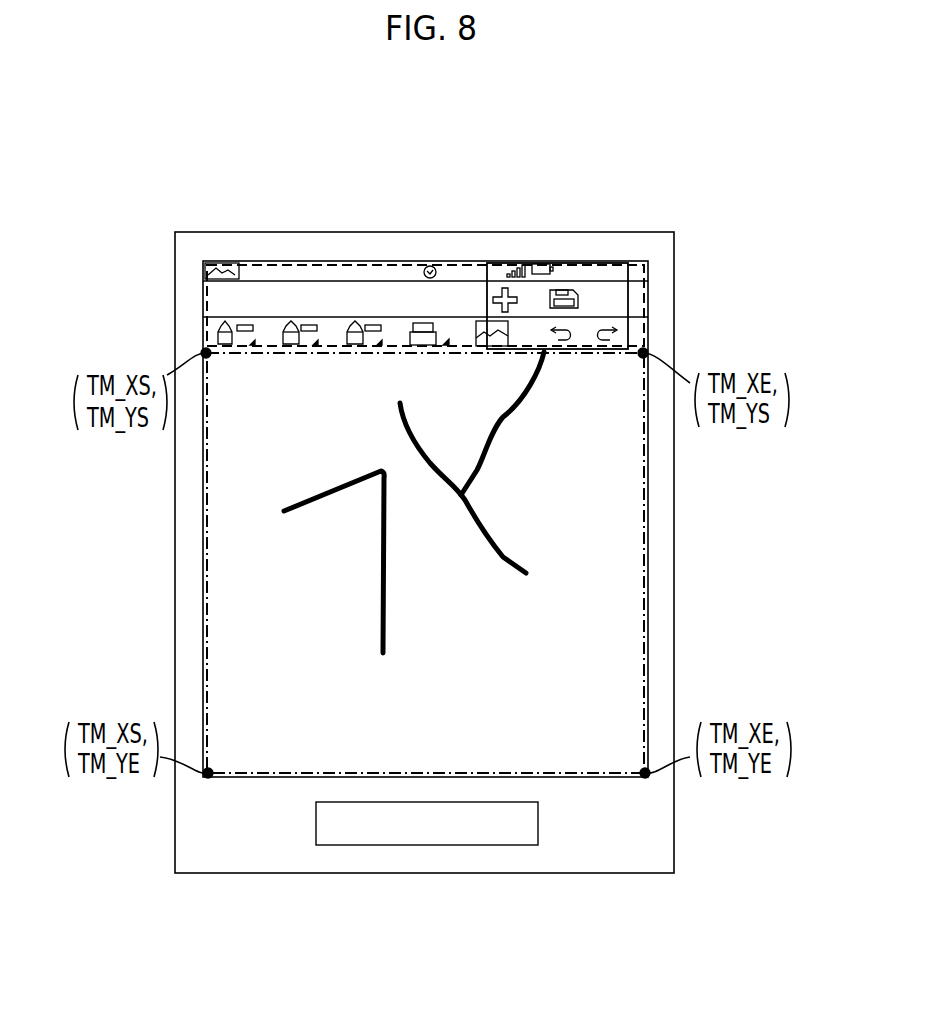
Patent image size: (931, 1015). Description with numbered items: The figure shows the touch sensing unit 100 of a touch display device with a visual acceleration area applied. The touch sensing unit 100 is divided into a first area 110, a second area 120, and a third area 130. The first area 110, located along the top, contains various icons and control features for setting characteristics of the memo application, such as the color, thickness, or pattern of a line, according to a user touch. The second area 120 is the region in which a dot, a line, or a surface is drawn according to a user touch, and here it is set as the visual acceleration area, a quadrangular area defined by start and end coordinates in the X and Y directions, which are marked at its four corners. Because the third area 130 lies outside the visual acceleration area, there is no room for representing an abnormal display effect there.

The touch sensing unit 100 is at (453, 146).
The first area 110 is at (472, 262).
The second area 120 is at (647, 541).
The third area 130 is at (577, 262).